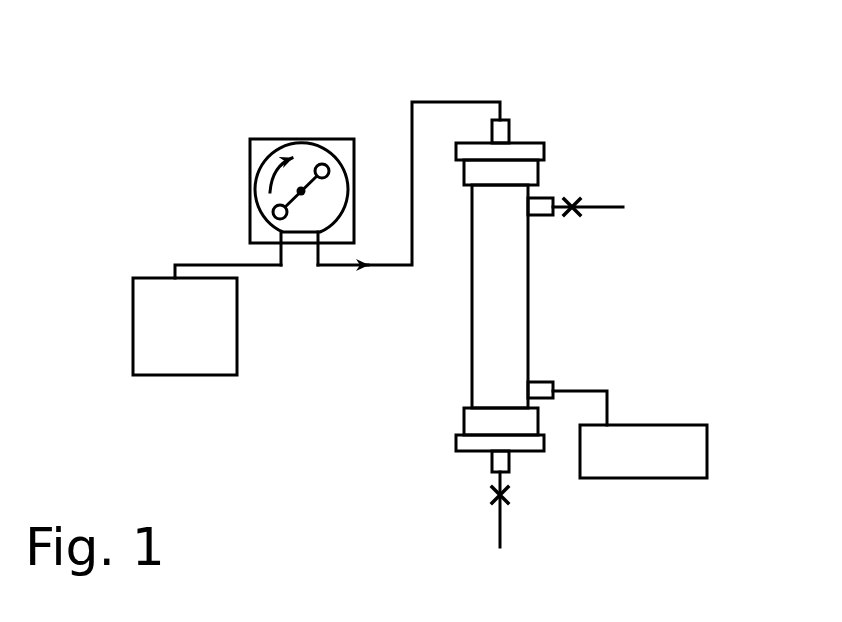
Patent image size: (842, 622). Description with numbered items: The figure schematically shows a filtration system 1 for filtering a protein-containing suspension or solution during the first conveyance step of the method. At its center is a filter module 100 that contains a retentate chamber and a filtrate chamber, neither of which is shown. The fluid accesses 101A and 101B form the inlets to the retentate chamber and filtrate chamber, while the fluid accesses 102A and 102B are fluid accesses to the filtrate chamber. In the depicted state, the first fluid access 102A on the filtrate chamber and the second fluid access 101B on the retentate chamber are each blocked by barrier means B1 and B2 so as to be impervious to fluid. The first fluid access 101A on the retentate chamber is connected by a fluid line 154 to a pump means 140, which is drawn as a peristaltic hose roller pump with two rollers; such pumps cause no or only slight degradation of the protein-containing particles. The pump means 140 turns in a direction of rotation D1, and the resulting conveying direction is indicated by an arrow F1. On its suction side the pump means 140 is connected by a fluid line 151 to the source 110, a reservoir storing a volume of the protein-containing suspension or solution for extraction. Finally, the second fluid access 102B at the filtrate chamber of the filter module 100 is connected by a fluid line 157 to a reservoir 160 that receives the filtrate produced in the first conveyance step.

The filtration system 1 is at (706, 130).
The filter module 100 is at (460, 395).
The first fluid access on the retentate chamber 101A is at (517, 122).
The second fluid access on the retentate chamber 101B is at (512, 467).
The first fluid access on the filtrate chamber 102A is at (557, 196).
The second fluid access on the filtrate chamber 102B is at (554, 378).
The source of protein-containing suspension or solution 110 is at (184, 382).
The pump means 140 is at (244, 173).
The fluid line 151 is at (231, 259).
The fluid line 154 is at (450, 98).
The fluid line 157 is at (620, 394).
The reservoir 160 is at (675, 485).
The barrier means B1 is at (590, 195).
The barrier means B2 is at (487, 507).
The direction of rotation D1 is at (272, 163).
The arrow F1 is at (370, 277).